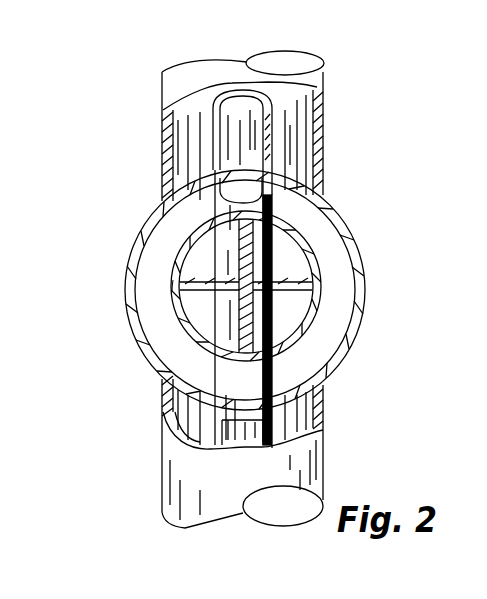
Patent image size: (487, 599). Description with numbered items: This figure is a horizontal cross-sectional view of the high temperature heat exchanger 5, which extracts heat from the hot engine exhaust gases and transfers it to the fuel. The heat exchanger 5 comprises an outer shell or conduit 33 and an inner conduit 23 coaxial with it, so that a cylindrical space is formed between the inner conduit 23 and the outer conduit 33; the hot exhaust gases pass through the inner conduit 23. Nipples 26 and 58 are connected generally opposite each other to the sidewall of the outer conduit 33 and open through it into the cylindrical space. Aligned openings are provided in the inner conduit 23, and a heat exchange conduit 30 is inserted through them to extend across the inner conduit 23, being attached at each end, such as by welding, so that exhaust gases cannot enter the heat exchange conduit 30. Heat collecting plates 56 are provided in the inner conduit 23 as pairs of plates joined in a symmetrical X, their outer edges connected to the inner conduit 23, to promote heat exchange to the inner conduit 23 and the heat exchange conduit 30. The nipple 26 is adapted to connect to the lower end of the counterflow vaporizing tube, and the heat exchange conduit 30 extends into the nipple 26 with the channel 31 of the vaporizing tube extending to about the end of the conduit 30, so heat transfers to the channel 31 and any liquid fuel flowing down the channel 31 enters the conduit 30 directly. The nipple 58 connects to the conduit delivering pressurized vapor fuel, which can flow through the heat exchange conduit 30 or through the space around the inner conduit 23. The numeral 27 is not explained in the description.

The high temperature heat exchanger 5 is at (362, 336).
The nipple 58 is at (323, 85).
The nipple 26 is at (323, 473).
The heat collecting plate 56 is at (272, 267).
The outer shell or conduit 33 is at (137, 237).
The annular gap 27 is at (158, 276).
The inner conduit 23 is at (268, 316).
The heat exchange conduit 30 is at (270, 286).
The channel 31 is at (222, 429).